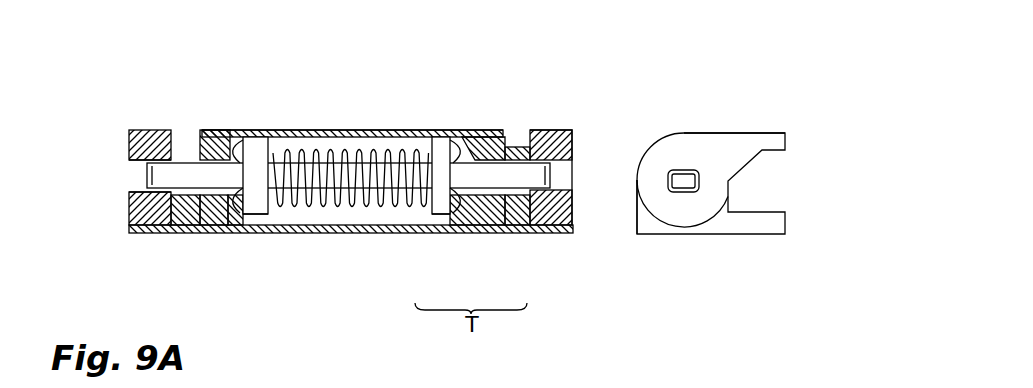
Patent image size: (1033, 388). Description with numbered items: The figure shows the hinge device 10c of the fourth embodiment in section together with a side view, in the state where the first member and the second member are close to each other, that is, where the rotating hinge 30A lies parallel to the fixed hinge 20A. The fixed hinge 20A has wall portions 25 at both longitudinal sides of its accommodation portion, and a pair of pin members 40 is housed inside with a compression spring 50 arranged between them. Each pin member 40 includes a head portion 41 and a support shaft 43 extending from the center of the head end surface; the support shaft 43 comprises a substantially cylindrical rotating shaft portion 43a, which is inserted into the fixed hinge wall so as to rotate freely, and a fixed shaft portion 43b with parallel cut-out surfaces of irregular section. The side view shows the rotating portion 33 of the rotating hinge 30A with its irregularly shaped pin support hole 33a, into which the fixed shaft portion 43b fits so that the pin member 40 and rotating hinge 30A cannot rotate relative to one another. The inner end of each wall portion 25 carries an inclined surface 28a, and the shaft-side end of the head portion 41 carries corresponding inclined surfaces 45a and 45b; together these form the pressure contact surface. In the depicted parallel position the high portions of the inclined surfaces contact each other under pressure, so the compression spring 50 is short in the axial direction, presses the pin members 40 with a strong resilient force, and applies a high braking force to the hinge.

The hinge device 10c is at (390, 121).
The fixed hinge 20A is at (322, 132).
The wall portion 25 is at (183, 233).
The inclined surface 28a is at (222, 233).
The rotating hinge 30A is at (545, 121).
The rotating portion 33 is at (145, 128).
The pin support hole 33a is at (143, 153).
The pin member 40 is at (270, 221).
The head portion 41 is at (256, 131).
The support shaft 43 is at (548, 178).
The rotating shaft portion 43a is at (203, 233).
The fixed shaft portion 43b is at (150, 181).
The inclined surface 45a is at (255, 233).
The inclined surface 45b is at (228, 130).
The compression spring 50 is at (350, 210).